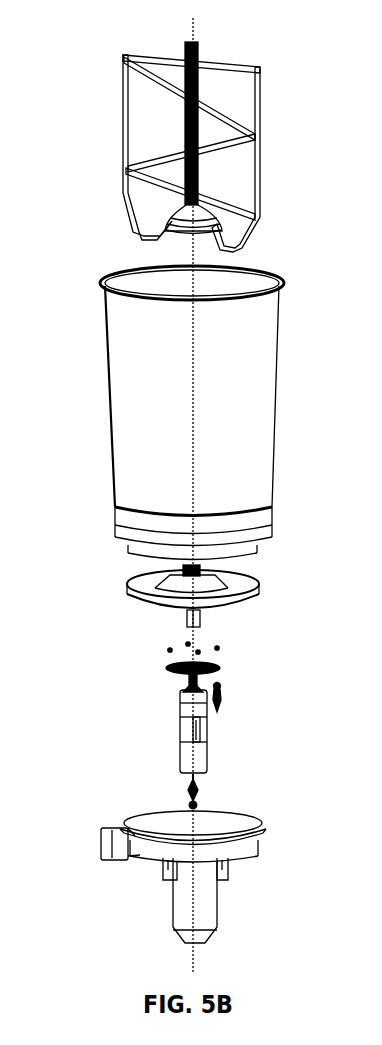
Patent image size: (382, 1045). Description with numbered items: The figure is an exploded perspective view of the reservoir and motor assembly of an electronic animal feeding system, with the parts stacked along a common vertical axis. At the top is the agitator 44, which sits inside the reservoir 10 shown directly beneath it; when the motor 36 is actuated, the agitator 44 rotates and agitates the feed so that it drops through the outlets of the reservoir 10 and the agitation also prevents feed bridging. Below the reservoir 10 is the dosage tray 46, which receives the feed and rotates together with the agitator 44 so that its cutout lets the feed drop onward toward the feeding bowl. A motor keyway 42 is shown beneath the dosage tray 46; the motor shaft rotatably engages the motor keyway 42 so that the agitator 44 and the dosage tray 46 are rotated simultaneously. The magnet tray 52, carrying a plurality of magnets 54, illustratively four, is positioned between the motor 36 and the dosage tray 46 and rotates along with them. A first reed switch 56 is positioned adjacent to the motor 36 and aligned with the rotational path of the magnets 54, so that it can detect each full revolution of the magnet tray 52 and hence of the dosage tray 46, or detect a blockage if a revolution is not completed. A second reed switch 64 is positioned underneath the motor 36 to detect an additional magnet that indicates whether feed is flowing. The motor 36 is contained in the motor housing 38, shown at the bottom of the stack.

The agitator 44 is at (128, 130).
The reservoir 10 is at (118, 360).
The dosage tray 46 is at (140, 598).
The motor keyway 42 is at (200, 625).
The magnets 54 is at (192, 645).
The magnet tray 52 is at (166, 670).
The motor 36 is at (181, 749).
The first reed switch 56 is at (221, 700).
The second reed switch 64 is at (200, 794).
The motor housing 38 is at (175, 913).